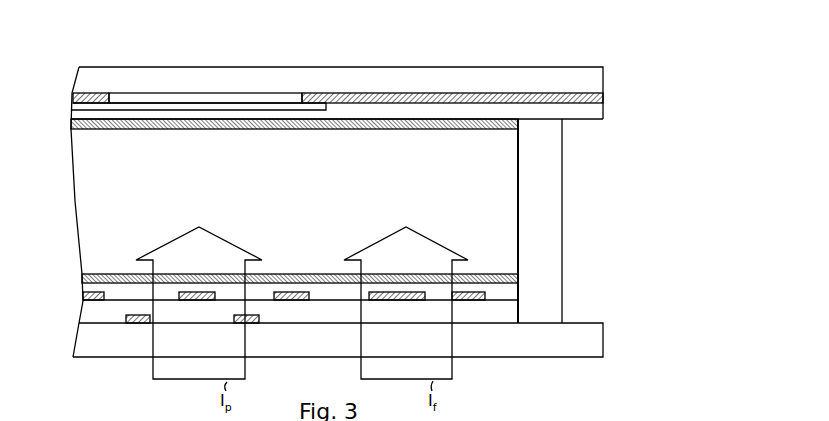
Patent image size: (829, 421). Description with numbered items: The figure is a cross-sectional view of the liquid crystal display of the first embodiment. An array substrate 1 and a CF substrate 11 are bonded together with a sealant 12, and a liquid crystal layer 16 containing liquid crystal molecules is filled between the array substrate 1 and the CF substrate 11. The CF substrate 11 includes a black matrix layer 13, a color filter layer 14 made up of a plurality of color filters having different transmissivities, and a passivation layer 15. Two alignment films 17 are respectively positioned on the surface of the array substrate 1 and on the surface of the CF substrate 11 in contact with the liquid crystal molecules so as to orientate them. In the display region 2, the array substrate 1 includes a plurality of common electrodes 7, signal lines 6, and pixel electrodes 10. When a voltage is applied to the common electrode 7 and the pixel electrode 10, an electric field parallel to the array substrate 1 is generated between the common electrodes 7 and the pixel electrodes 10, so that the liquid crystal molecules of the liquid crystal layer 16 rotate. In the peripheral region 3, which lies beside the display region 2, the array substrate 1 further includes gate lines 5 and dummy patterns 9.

The array substrate 1 is at (592, 339).
The display region 2 is at (325, 110).
The peripheral region 3 is at (517, 118).
The gate line 5 is at (466, 299).
The signal line 6 is at (82, 301).
The common electrode 7 is at (125, 318).
The dummy pattern 9 is at (401, 299).
The pixel electrode 10 is at (192, 300).
The CF substrate 11 is at (547, 72).
The sealant 12 is at (557, 183).
The black matrix layer 13 is at (72, 97).
The color filter layer 14 is at (96, 105).
The passivation layer 15 is at (597, 111).
The liquid crystal layer 16 is at (505, 230).
The alignment film 17 is at (492, 128).